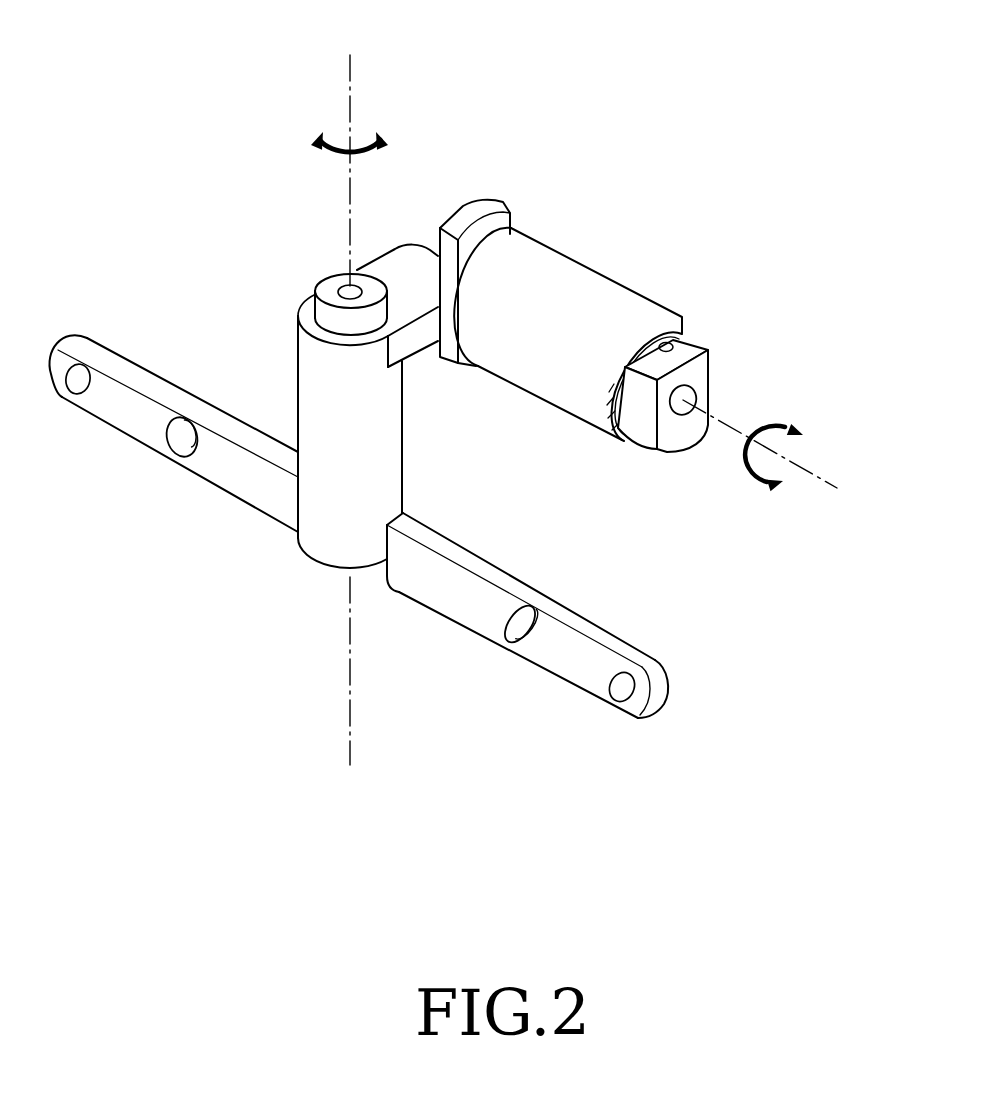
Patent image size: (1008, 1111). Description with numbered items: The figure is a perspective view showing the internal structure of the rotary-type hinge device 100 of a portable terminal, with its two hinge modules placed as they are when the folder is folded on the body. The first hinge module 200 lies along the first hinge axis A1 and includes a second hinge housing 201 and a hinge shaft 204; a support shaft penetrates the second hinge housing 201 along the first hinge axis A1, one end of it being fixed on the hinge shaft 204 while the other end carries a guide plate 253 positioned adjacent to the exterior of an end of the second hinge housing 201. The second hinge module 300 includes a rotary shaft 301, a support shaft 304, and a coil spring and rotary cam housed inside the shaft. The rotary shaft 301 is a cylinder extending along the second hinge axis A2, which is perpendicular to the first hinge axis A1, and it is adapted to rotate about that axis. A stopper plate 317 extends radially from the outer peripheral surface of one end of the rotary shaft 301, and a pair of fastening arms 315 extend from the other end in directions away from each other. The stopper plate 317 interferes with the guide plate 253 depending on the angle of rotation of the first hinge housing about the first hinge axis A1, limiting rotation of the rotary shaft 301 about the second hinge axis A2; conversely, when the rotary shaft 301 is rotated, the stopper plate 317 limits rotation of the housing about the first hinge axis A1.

The rotary-type hinge device 100 is at (243, 32).
The first hinge module 200 is at (760, 220).
The second hinge housing 201 is at (600, 250).
The hinge shaft 204 is at (712, 335).
The guide plate 253 is at (480, 205).
The second hinge module 300 is at (185, 247).
The rotary shaft 301 is at (428, 490).
The support shaft 304 is at (316, 263).
The fastening arms 315 is at (147, 432).
The stopper plate 317 is at (407, 346).
The first hinge axis A1 is at (818, 477).
The second hinge axis A2 is at (352, 90).